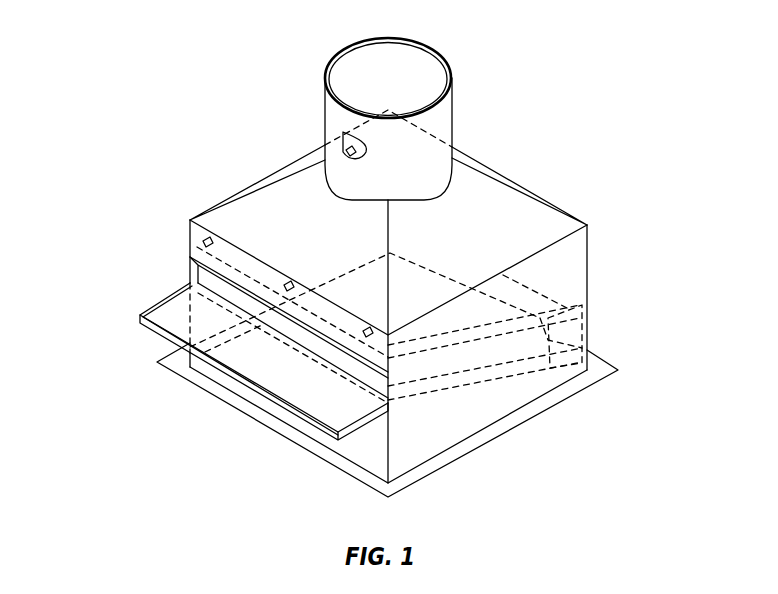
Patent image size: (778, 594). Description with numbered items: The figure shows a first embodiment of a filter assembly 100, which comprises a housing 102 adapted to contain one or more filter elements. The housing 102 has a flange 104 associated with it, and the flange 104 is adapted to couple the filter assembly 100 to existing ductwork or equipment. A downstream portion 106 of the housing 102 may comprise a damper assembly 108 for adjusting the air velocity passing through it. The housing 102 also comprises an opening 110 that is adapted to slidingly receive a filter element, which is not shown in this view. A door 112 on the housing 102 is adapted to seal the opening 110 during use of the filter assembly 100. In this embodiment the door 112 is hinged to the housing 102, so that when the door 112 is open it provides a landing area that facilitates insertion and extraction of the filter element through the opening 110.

The filter assembly 100 is at (157, 79).
The housing 102 is at (578, 243).
The flange 104 is at (597, 366).
The downstream portion 106 is at (333, 112).
The damper assembly 108 is at (347, 145).
The opening 110 is at (387, 377).
The door 112 is at (170, 317).